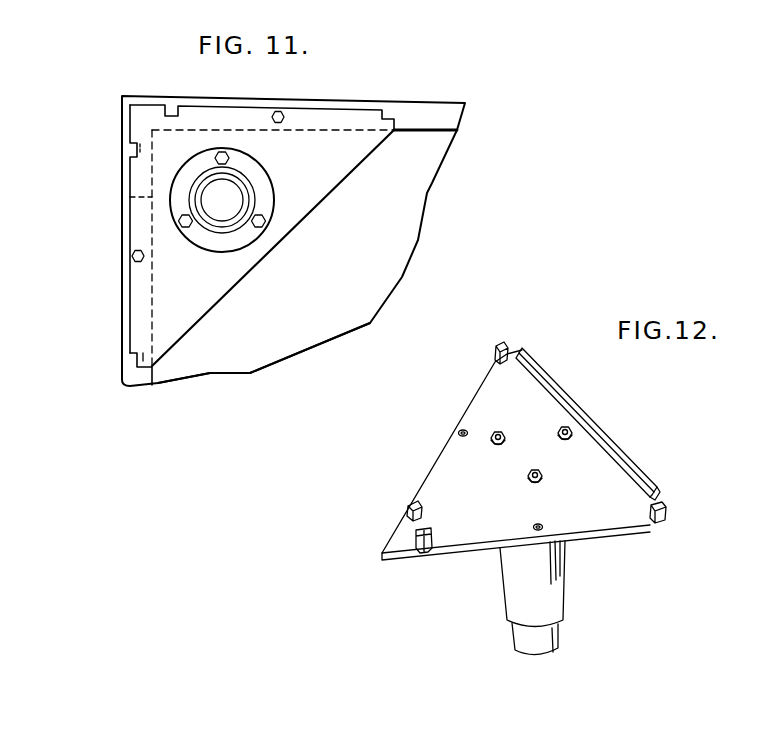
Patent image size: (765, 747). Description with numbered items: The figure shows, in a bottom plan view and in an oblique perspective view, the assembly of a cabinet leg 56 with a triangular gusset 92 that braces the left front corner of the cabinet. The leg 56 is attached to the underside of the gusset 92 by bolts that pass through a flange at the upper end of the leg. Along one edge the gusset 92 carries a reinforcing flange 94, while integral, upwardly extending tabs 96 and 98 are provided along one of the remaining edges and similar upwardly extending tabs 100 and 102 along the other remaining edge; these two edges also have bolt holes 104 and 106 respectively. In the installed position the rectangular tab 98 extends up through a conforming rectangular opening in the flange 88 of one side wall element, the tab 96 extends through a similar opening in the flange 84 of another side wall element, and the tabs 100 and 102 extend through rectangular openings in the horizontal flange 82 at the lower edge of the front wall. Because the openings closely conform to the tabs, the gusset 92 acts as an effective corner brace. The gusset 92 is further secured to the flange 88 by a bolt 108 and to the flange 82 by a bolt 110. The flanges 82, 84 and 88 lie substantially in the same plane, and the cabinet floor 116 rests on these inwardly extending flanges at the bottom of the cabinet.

In FIG. 11, the leg 56 is at (243, 183).
In FIG. 12, the leg 56 is at (550, 587).
In FIG. 11, the horizontal flange 82 is at (423, 113).
In FIG. 11, the flange 84 is at (126, 147).
In FIG. 11, the flange 88 is at (128, 377).
In FIG. 11, the triangular gusset 92 is at (312, 185).
In FIG. 12, the triangular gusset 92 is at (490, 530).
In FIG. 12, the reinforcing flange 94 is at (610, 433).
In FIG. 12, the tab 96 is at (408, 506).
In FIG. 12, the tab 98 is at (503, 343).
In FIG. 12, the tab 100 is at (418, 553).
In FIG. 12, the tab 102 is at (668, 512).
In FIG. 12, the bolt hole 104 is at (457, 432).
In FIG. 12, the bolt hole 106 is at (545, 523).
In FIG. 11, the bolt 108 is at (132, 257).
In FIG. 11, the bolt 110 is at (278, 110).
In FIG. 11, the floor 116 is at (224, 354).